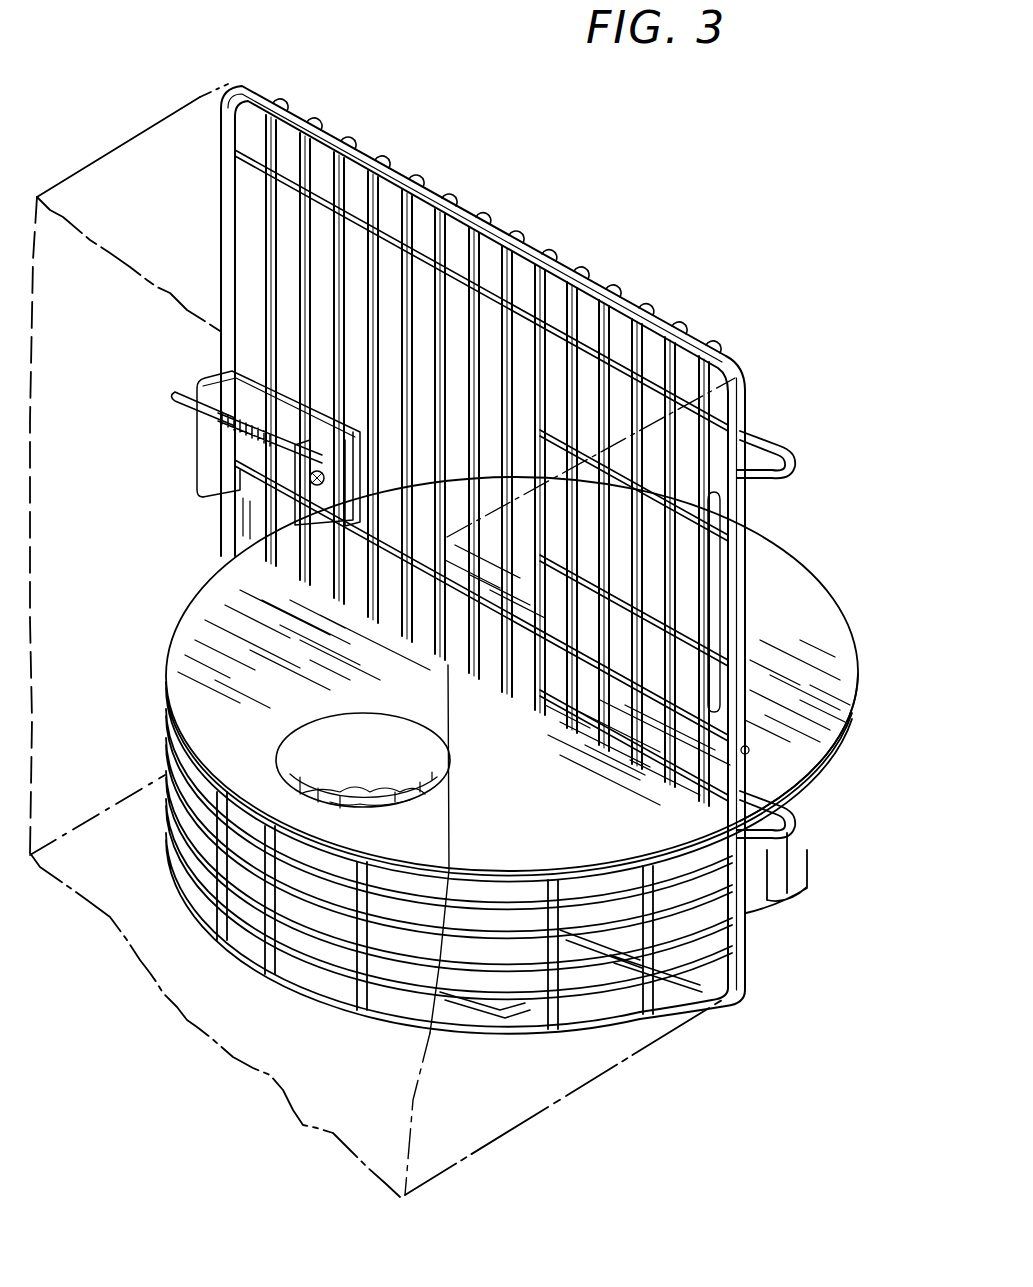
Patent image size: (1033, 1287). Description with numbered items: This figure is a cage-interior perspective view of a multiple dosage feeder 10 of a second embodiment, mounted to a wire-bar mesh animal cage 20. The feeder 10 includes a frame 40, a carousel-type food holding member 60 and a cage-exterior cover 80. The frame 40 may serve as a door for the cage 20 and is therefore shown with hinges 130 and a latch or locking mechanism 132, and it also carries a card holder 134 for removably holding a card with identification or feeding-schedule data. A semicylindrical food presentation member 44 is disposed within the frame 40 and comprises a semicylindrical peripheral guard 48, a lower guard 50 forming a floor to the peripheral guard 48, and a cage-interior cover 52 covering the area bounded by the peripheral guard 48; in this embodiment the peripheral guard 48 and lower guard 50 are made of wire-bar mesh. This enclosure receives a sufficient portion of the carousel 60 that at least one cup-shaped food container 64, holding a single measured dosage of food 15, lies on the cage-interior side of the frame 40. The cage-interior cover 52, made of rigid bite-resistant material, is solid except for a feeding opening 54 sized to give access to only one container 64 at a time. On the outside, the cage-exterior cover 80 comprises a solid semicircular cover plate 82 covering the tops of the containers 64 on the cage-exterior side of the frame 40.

The multiple dosage feeder 10 is at (752, 533).
The food 15 is at (399, 787).
The animal cage 20 is at (102, 156).
The frame 40 is at (297, 106).
The food presentation member 44 is at (194, 595).
The peripheral guard 48 is at (713, 1002).
The lower guard 50 is at (498, 1010).
The cage-interior cover 52 is at (262, 720).
The feeding opening 54 is at (328, 726).
The food holding member 60 is at (819, 820).
The food container 64 is at (362, 724).
The cage-exterior cover 80 is at (852, 631).
The cover plate 82 is at (836, 704).
The hinges 130 is at (794, 470).
The latch or locking mechanism 132 is at (205, 460).
The card holder 134 is at (750, 750).